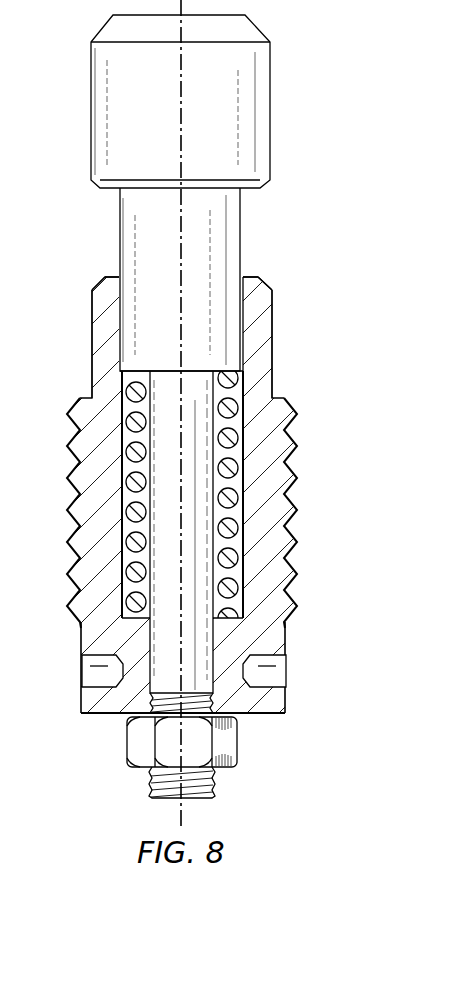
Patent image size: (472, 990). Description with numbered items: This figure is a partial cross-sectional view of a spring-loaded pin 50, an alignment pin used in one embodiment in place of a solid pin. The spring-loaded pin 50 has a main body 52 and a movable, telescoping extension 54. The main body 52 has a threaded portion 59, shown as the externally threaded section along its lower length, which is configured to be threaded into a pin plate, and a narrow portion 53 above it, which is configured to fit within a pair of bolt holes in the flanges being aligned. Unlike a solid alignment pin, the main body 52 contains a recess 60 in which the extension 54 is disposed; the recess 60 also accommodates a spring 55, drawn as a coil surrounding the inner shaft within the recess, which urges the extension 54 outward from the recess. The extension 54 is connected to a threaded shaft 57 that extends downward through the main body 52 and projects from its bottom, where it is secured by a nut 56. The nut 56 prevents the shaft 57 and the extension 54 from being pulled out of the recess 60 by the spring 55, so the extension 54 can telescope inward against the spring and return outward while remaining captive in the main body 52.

The spring-loaded pin 50 is at (288, 268).
The main body 52 is at (302, 474).
The narrow portion 53 is at (273, 332).
The telescoping extension 54 is at (271, 107).
The spring 55 is at (121, 381).
The nut 56 is at (237, 745).
The threaded shaft 57 is at (216, 639).
The threaded portion 59 is at (295, 545).
The recess 60 is at (240, 392).